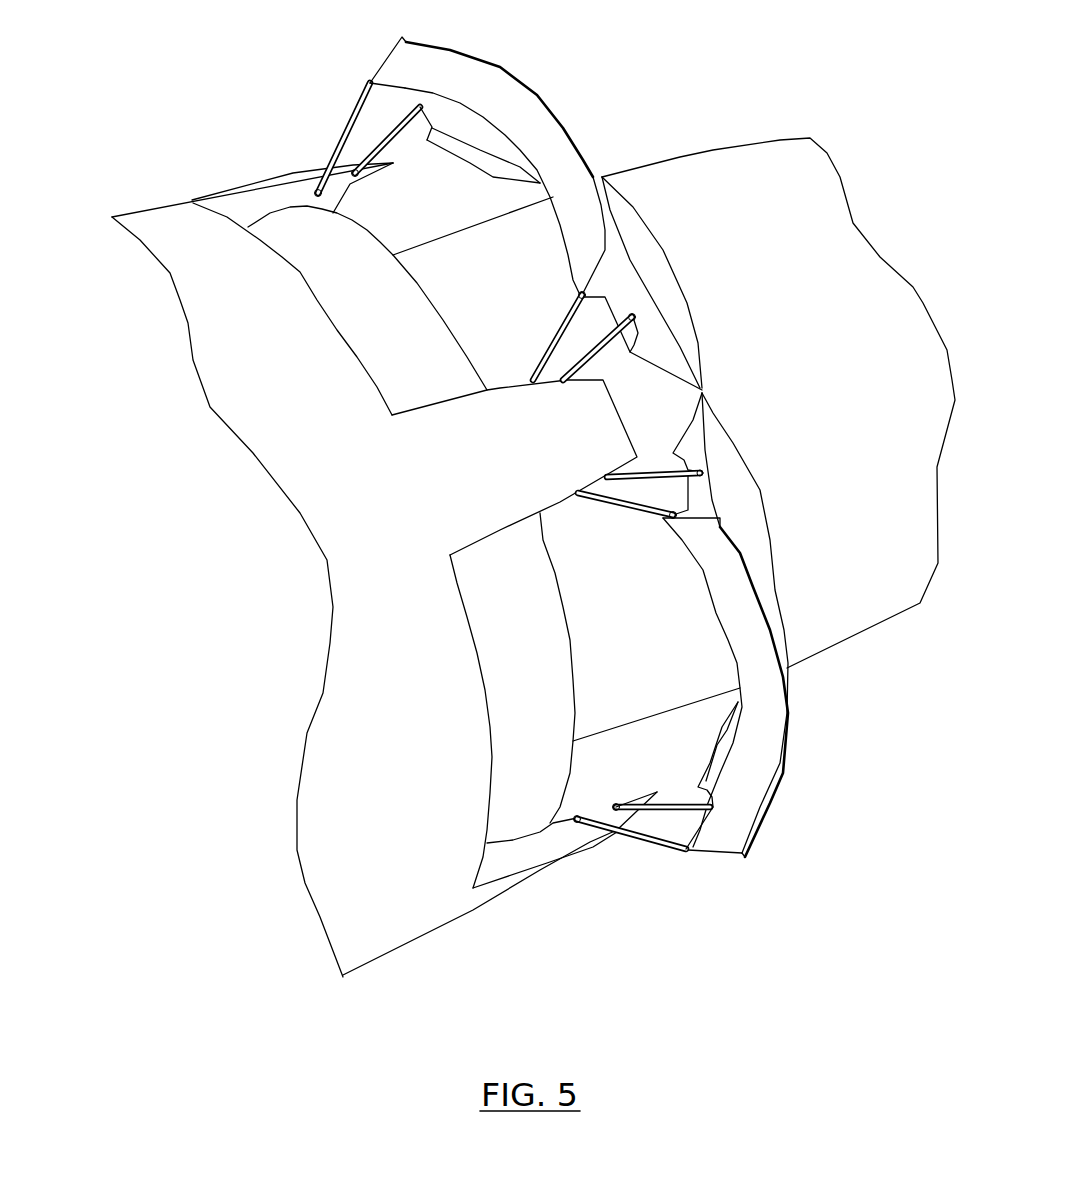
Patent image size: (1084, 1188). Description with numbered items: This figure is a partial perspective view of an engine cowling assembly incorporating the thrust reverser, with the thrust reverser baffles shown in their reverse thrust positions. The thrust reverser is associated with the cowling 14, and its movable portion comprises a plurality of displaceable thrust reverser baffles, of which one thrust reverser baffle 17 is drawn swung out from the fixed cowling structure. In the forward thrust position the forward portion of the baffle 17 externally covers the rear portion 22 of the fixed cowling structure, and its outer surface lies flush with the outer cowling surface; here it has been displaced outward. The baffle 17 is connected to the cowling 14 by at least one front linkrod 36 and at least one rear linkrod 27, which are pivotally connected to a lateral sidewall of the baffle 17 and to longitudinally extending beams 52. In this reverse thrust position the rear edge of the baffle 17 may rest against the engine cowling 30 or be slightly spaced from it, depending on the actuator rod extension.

The cowling 14 is at (177, 233).
The rear portion of the fixed cowling structure 22 is at (298, 232).
The rear linkrod 27 is at (393, 130).
The thrust reverser baffle 17 is at (586, 162).
The engine cowling 30 is at (695, 190).
The longitudinally extending beam 52 is at (580, 435).
The front linkrod 36 is at (637, 842).